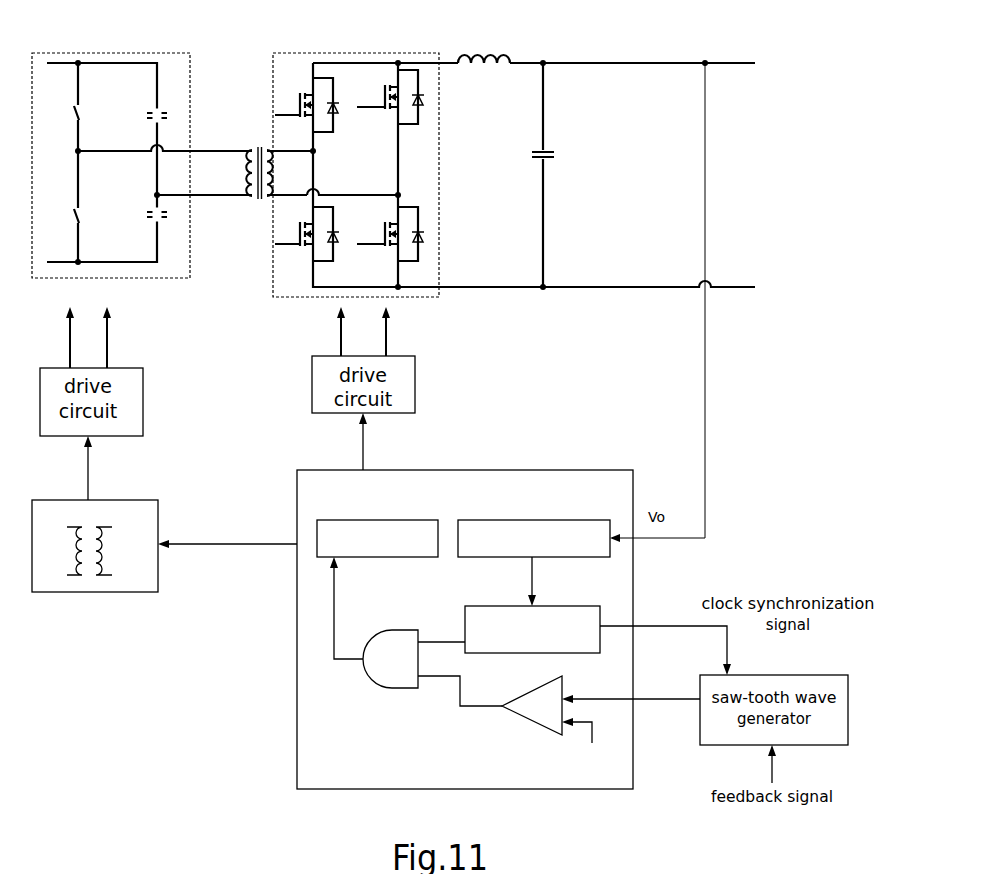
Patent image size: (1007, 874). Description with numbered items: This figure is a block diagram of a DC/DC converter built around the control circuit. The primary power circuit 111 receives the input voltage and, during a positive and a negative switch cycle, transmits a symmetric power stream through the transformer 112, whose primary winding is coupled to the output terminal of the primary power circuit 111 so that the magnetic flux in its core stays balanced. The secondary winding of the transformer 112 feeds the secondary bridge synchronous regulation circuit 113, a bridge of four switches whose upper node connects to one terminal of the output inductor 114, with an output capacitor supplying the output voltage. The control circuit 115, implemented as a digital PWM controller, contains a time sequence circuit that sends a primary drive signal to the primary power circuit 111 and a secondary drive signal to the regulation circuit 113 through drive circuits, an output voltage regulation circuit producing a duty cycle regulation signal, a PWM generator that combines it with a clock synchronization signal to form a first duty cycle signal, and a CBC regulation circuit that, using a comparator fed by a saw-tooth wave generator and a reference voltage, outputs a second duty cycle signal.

The primary power circuit 111 is at (103, 47).
The transformer 112 is at (256, 145).
The secondary bridge synchronous regulation circuit 113 is at (355, 53).
The output inductor 114 is at (487, 47).
The control circuit 115 is at (490, 470).